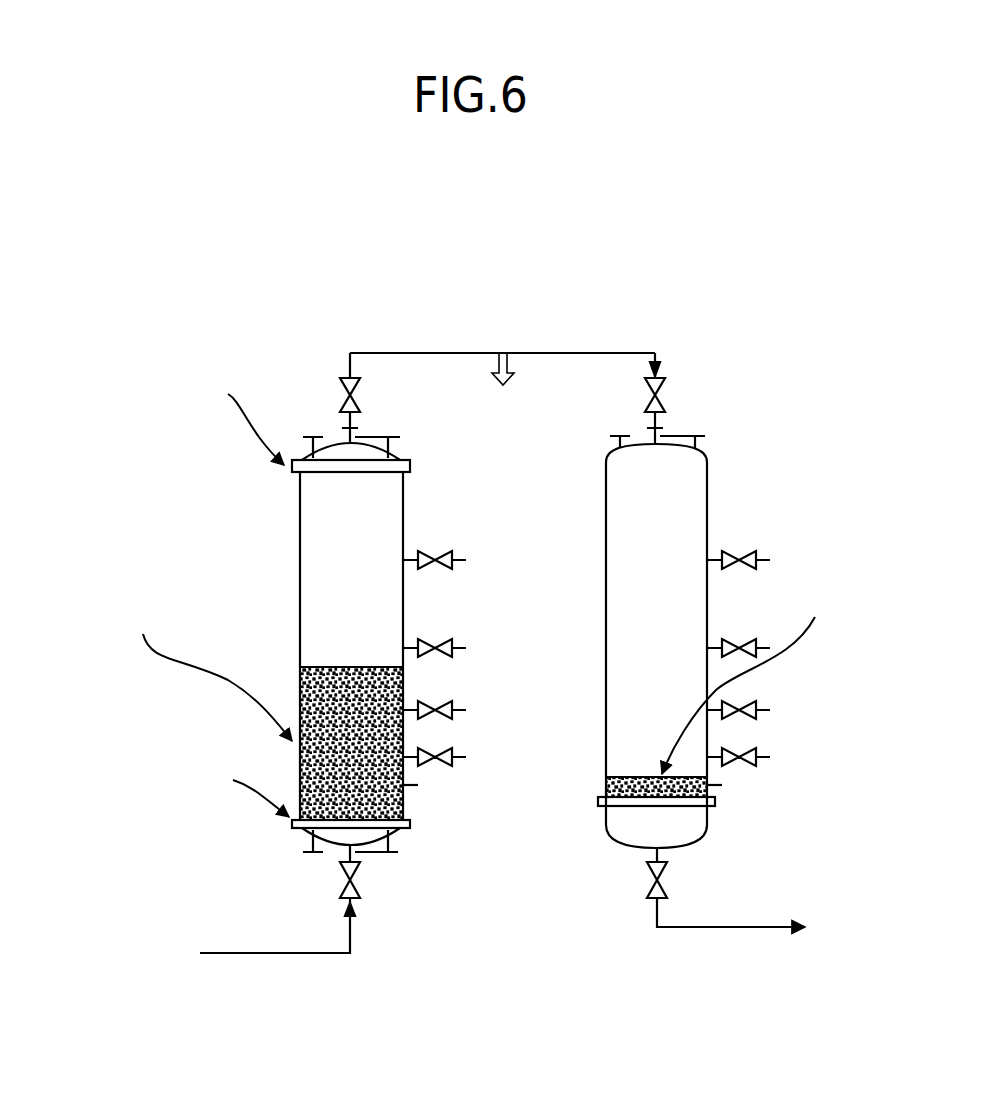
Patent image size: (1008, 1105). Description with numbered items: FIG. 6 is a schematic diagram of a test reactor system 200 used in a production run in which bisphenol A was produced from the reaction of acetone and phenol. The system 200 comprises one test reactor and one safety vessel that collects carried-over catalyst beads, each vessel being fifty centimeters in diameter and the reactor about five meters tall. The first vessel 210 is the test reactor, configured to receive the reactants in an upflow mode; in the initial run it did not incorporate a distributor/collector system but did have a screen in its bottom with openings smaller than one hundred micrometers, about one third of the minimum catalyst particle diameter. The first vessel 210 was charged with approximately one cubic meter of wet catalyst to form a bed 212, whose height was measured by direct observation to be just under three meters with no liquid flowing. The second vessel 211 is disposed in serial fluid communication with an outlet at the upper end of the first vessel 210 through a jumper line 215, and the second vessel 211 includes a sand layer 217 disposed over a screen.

The test reactor system 200 is at (710, 220).
The first vessel 210 is at (296, 553).
The second vessel 211 is at (712, 522).
The bed 212 is at (298, 696).
The jumper line 215 is at (433, 352).
The sand layer 217 is at (722, 785).